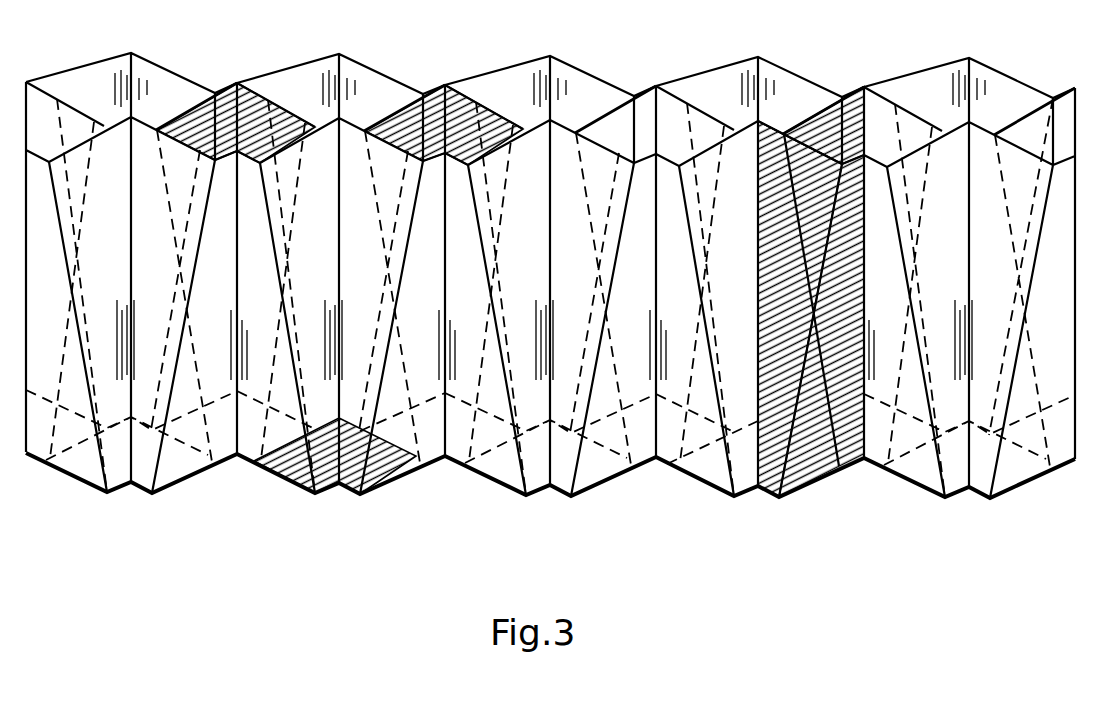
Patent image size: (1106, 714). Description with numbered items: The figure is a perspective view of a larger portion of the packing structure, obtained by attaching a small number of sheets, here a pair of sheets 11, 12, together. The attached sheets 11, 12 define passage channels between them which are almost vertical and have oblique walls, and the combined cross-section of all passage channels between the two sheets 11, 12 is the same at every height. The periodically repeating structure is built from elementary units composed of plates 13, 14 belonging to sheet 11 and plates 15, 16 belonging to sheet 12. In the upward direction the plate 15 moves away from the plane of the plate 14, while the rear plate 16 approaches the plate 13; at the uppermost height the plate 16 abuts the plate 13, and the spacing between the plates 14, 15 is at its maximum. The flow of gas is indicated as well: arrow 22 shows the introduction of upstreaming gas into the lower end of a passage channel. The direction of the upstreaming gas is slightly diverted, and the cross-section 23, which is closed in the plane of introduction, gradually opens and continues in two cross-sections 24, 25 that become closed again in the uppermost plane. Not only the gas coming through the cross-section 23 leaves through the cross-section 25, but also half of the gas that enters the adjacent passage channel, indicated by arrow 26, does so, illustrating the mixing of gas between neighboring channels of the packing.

The sheet 11 is at (705, 468).
The sheet 12 is at (603, 122).
The plate 13 is at (778, 478).
The plate 14 is at (815, 468).
The plate 15 is at (817, 122).
The rear plate 16 is at (770, 128).
The arrow 22 is at (340, 456).
The cross-section 23 is at (273, 468).
The cross-section 24 is at (246, 98).
The cross-section 25 is at (484, 100).
The arrow 26 is at (562, 463).